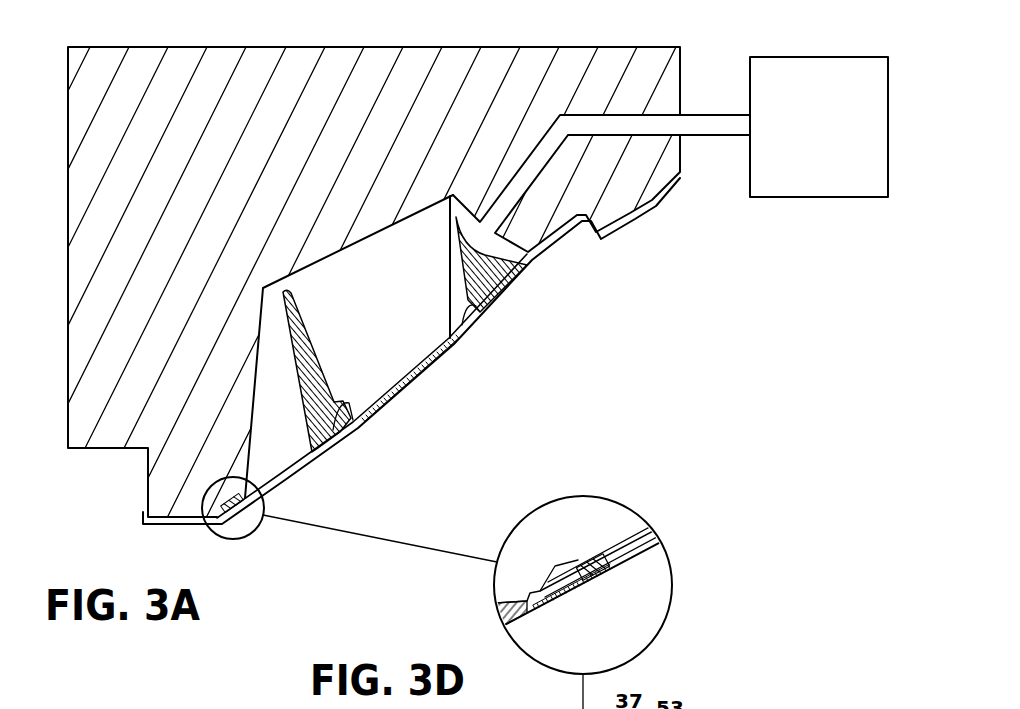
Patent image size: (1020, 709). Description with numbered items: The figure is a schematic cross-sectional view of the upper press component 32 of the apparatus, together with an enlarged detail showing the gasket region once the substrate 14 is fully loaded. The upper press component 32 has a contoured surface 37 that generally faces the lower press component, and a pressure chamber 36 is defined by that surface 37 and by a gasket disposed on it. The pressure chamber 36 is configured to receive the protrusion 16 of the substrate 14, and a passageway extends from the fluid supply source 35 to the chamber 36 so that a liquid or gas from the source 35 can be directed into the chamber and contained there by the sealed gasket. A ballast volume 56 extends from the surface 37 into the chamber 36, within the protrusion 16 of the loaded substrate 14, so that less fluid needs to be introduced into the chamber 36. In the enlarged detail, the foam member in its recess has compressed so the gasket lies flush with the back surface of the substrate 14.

The upper press component 32 is at (92, 147).
The protrusion 16 is at (258, 358).
The fluid supply source 35 is at (800, 198).
The ballast volume 56 is at (284, 293).
The pressure chamber 36 is at (462, 291).
The substrate 14 is at (680, 173).
The contoured surface 37 is at (256, 434).